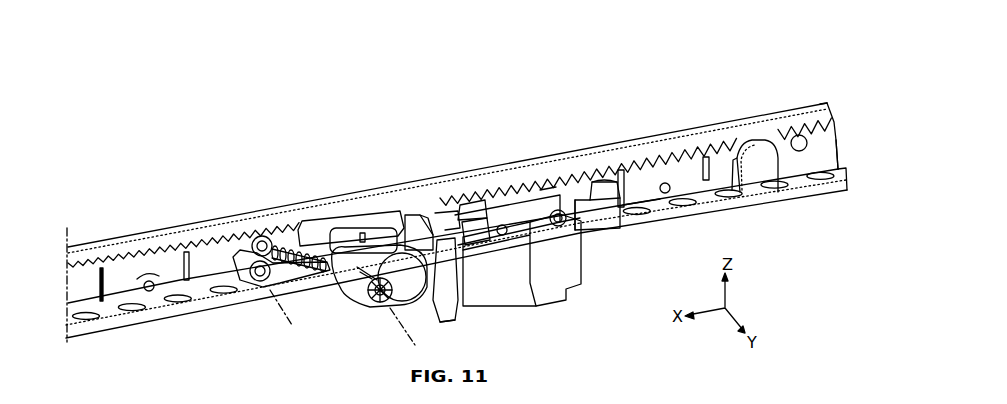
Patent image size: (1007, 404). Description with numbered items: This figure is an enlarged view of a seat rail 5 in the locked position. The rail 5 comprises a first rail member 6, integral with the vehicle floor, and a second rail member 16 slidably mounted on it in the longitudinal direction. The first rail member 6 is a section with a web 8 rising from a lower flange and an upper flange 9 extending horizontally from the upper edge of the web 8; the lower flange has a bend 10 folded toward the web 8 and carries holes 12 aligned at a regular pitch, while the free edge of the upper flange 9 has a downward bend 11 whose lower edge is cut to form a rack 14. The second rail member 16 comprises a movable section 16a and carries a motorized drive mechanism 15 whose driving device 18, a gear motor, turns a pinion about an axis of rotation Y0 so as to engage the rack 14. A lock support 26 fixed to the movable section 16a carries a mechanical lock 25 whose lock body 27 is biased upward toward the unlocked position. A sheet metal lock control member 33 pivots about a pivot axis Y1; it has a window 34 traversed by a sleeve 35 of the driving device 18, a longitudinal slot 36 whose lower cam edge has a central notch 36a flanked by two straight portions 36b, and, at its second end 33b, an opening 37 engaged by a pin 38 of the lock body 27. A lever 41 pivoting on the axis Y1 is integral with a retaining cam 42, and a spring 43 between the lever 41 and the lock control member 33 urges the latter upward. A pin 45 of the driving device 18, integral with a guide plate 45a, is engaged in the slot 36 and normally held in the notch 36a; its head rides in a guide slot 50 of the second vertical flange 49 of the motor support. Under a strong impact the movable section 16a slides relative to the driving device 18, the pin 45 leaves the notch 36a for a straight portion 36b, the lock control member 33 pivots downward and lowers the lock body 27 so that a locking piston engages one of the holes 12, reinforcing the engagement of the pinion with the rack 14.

The rail 5 is at (761, 70).
The first rail member 6 is at (831, 99).
The web 8 is at (810, 157).
The upper flange 9 is at (804, 112).
The bend 10 is at (795, 183).
The bend 11 is at (841, 154).
The holes 12 is at (227, 293).
The rack 14 is at (775, 130).
The motorized drive mechanism 15 is at (366, 318).
The second rail member 16 is at (92, 290).
The movable section 16a is at (213, 263).
The driving device 18 is at (468, 294).
The mechanical lock 25 is at (573, 172).
The lock support 26 is at (628, 222).
The lock body 27 is at (550, 188).
The lock control member 33 is at (327, 230).
The second end 33b is at (582, 228).
The window 34 is at (367, 231).
The sleeve 35 is at (347, 237).
The slot 36 is at (444, 209).
The notch 36a is at (463, 245).
The straight portions 36b is at (458, 213).
The opening 37 is at (566, 226).
The pin 38 is at (566, 212).
The lever 41 is at (261, 238).
The retaining cam 42 is at (238, 279).
The spring 43 is at (283, 250).
The pin 45 is at (420, 227).
The guide plate 45a is at (418, 226).
The second vertical flange 49 is at (447, 209).
The guide slot 50 is at (470, 248).
The axis of rotation Y0 is at (405, 343).
The pivot axis Y1 is at (283, 322).